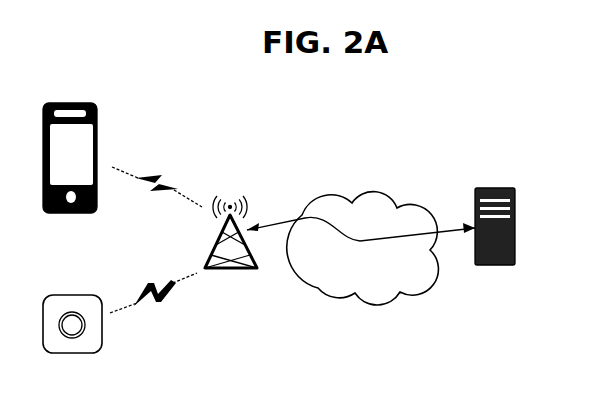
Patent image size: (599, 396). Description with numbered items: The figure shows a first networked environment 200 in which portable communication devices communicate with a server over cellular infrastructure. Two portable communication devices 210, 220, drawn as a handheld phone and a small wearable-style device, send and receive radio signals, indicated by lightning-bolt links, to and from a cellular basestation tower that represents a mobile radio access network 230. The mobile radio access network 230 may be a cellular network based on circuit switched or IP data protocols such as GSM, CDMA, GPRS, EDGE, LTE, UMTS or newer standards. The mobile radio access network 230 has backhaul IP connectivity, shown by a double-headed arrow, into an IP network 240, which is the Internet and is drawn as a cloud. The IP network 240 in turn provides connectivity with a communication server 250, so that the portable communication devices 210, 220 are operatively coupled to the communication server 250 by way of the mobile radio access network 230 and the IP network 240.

The networked environment 200 is at (339, 89).
The portable communication device 210 is at (70, 102).
The portable communication device 220 is at (65, 293).
The mobile radio access network 230 is at (230, 192).
The IP network 240 is at (388, 277).
The communication server 250 is at (495, 188).